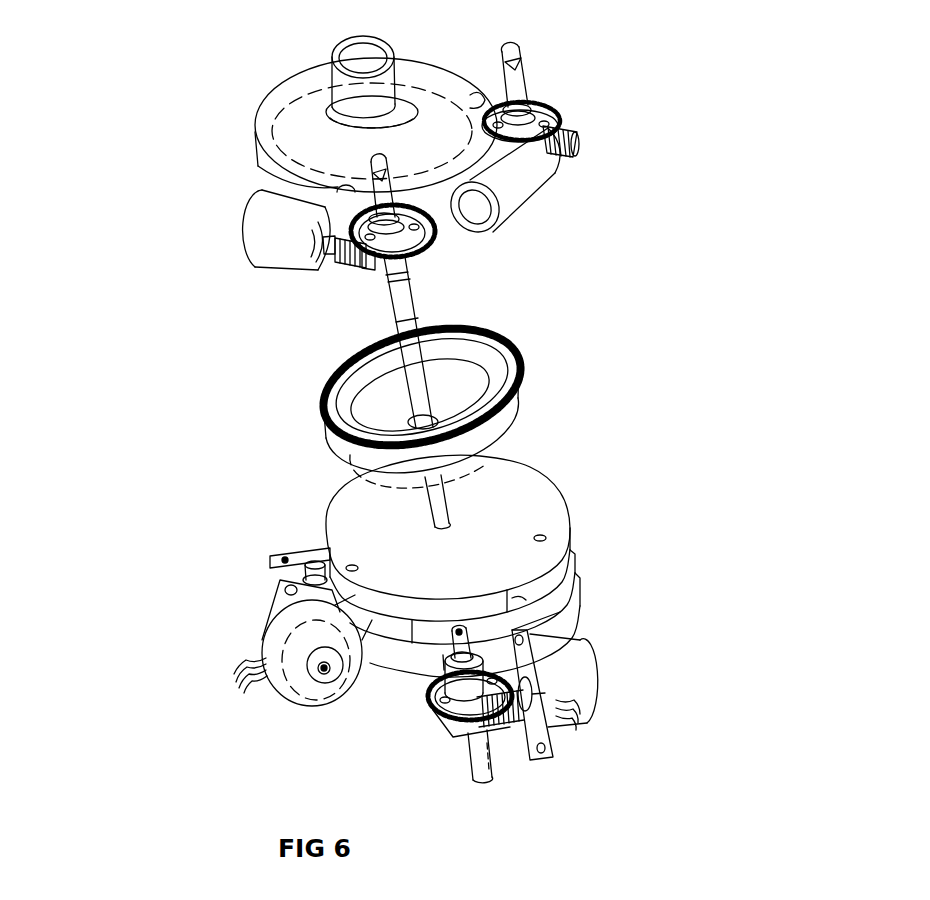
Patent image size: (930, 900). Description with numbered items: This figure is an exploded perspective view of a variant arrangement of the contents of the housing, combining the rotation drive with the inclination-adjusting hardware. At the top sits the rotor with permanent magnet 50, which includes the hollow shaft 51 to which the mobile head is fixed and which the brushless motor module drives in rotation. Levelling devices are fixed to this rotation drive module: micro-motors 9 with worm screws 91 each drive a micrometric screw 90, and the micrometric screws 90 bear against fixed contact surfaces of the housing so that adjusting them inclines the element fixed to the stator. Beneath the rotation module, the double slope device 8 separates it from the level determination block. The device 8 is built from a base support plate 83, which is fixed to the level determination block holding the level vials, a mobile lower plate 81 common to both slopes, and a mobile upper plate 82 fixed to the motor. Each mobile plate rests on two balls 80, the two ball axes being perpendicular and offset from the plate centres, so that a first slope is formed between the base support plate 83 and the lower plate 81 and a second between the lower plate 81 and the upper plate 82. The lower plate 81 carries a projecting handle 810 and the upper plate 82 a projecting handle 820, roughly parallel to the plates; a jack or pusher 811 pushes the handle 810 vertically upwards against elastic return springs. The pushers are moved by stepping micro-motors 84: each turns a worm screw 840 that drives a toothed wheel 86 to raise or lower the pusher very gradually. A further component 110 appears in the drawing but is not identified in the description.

The housing 110 is at (302, 120).
The micrometric screw 90 is at (525, 78).
The worm screw 91 is at (563, 153).
The micro-motor 9 is at (305, 268).
The hollow shaft 51 is at (413, 343).
The rotor with permanent magnet 50 is at (325, 433).
The double slope device 8 is at (398, 589).
The mobile upper plate 82 is at (552, 550).
The mobile lower plate 81 is at (555, 587).
The balls 80 is at (520, 600).
The base support plate 83 is at (393, 670).
The projecting handle 820 is at (273, 557).
The stepping micro-motor 84 is at (277, 647).
The projecting handle 810 is at (455, 630).
The toothed wheel 86 is at (443, 718).
The worm screw 840 is at (508, 723).
The jack or pusher 811 is at (490, 765).